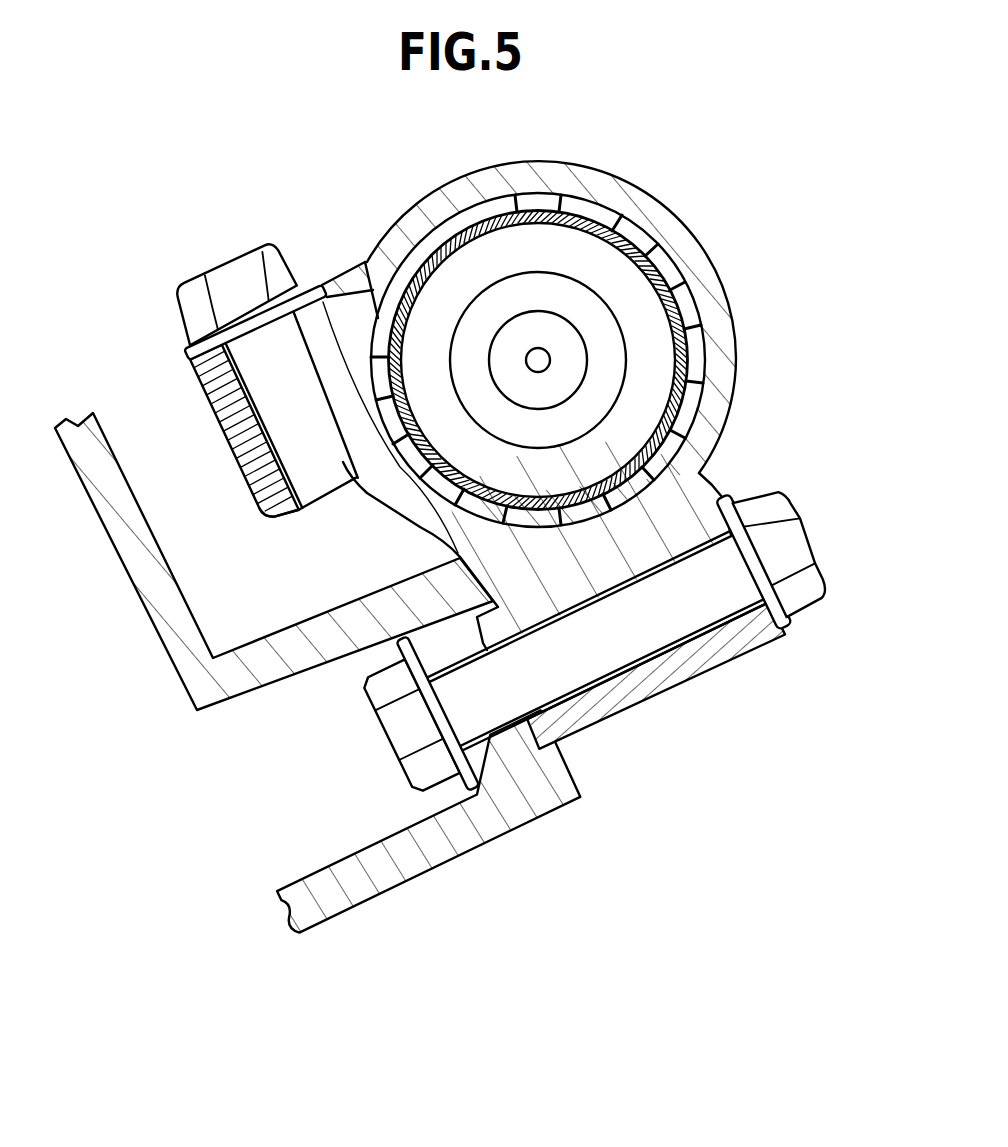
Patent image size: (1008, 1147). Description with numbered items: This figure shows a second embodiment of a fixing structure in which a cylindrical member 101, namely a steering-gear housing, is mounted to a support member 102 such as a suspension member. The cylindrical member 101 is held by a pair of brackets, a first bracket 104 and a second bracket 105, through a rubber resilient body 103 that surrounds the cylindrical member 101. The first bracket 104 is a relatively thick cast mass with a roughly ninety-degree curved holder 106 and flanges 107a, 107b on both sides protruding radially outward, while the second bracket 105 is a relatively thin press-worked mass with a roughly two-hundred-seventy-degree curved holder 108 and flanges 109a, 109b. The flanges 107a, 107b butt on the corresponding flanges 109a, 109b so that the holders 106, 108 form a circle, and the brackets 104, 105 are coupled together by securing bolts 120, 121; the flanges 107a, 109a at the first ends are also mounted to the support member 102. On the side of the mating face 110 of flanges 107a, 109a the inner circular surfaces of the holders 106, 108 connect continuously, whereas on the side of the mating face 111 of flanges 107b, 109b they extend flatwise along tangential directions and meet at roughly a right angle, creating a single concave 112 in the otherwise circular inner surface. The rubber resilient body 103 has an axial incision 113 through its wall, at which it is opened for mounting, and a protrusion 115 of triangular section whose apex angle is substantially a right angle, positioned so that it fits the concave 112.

The cylindrical member 101 is at (630, 223).
The support member 102 is at (407, 877).
The rubber resilient body 103 is at (553, 198).
The first bracket 104 is at (607, 727).
The second bracket 105 is at (733, 387).
The holder 106 is at (417, 522).
The flange 107a is at (673, 673).
The flange 107b is at (240, 458).
The holder 108 is at (700, 247).
The flange 109a is at (773, 643).
The flange 109b is at (183, 353).
The mating face 110 is at (750, 653).
The mating face 111 is at (197, 404).
The concave 112 is at (383, 270).
The incision 113 is at (680, 433).
The protrusion 115 is at (335, 292).
The securing bolt 120 is at (817, 590).
The securing bolt 121 is at (252, 510).